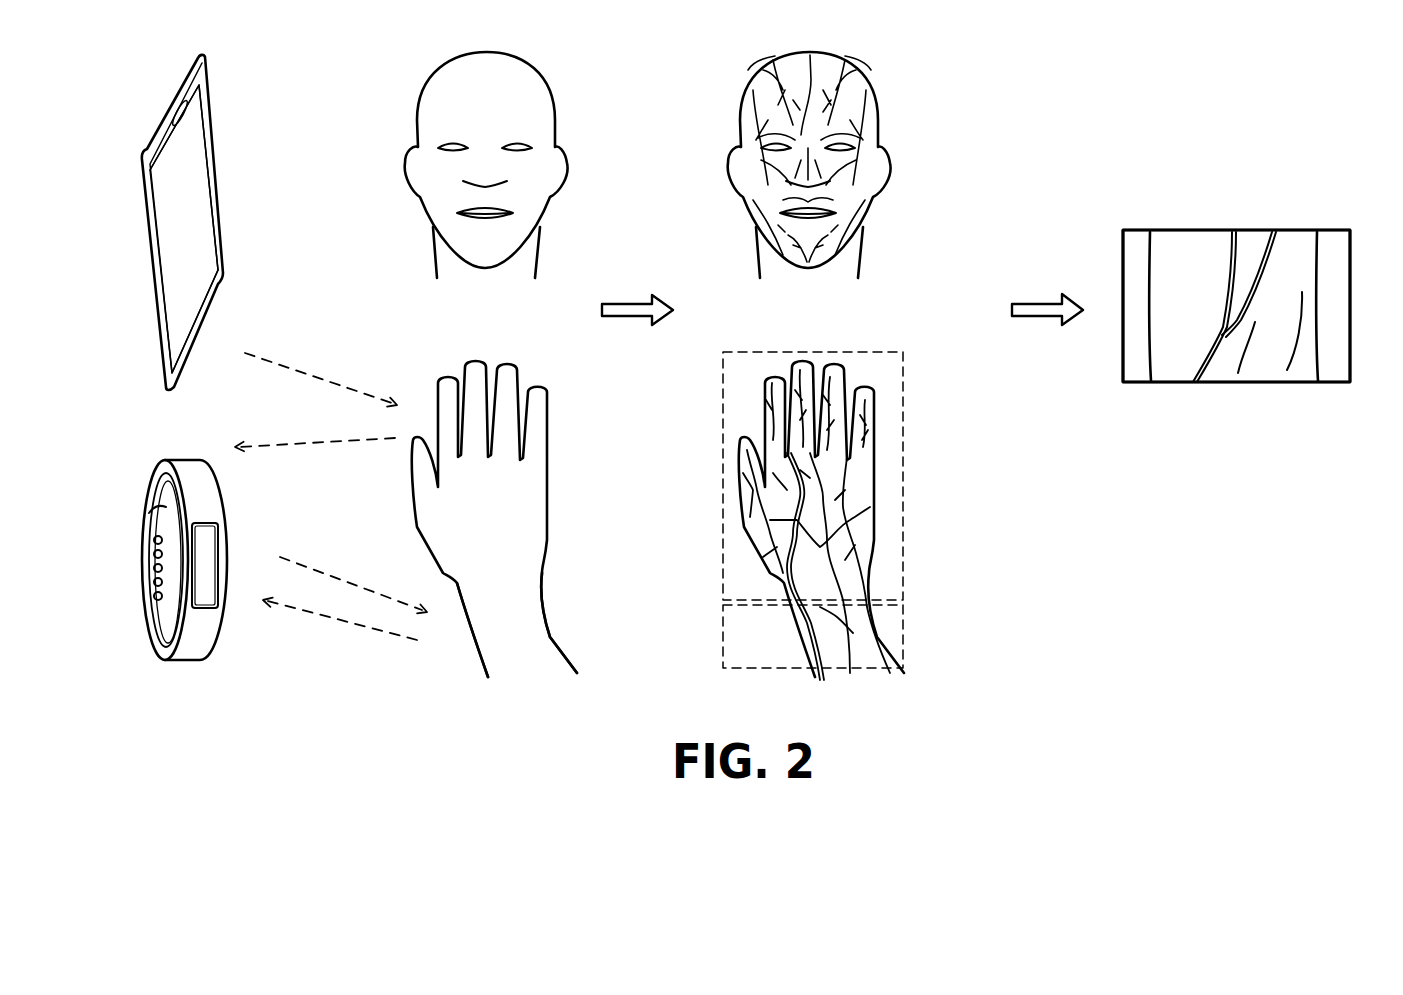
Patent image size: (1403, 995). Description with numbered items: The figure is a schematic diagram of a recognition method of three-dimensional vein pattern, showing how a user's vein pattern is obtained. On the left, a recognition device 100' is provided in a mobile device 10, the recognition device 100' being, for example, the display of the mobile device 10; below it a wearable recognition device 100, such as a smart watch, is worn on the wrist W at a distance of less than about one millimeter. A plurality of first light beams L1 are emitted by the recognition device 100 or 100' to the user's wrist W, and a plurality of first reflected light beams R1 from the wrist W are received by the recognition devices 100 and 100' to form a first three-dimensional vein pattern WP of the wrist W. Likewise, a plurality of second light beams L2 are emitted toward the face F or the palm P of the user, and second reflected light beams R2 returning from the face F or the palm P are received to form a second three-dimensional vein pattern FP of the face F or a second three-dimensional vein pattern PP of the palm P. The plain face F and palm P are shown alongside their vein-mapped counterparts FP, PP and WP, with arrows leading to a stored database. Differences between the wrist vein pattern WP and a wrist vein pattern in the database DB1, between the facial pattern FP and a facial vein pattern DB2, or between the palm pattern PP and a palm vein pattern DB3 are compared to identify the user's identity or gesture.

The mobile device 10 is at (178, 92).
The recognition device 100' is at (223, 229).
The recognition device 100 is at (192, 593).
The first light beams L1 is at (353, 577).
The second light beams L2 is at (321, 371).
The first reflected light beams R1 is at (340, 626).
The second reflected light beams R2 is at (315, 459).
The palm P is at (532, 510).
The wrist W is at (543, 643).
The face F is at (543, 82).
The second 3D vein pattern of the face FP is at (866, 82).
The second 3D vein pattern of the palm PP is at (903, 487).
The first 3D vein pattern of the wrist WP is at (903, 637).
The database DB1 is at (1200, 230).
The facial vein pattern in the database DB2 is at (1236, 306).
The palm vein pattern in the database DB3 is at (1236, 306).